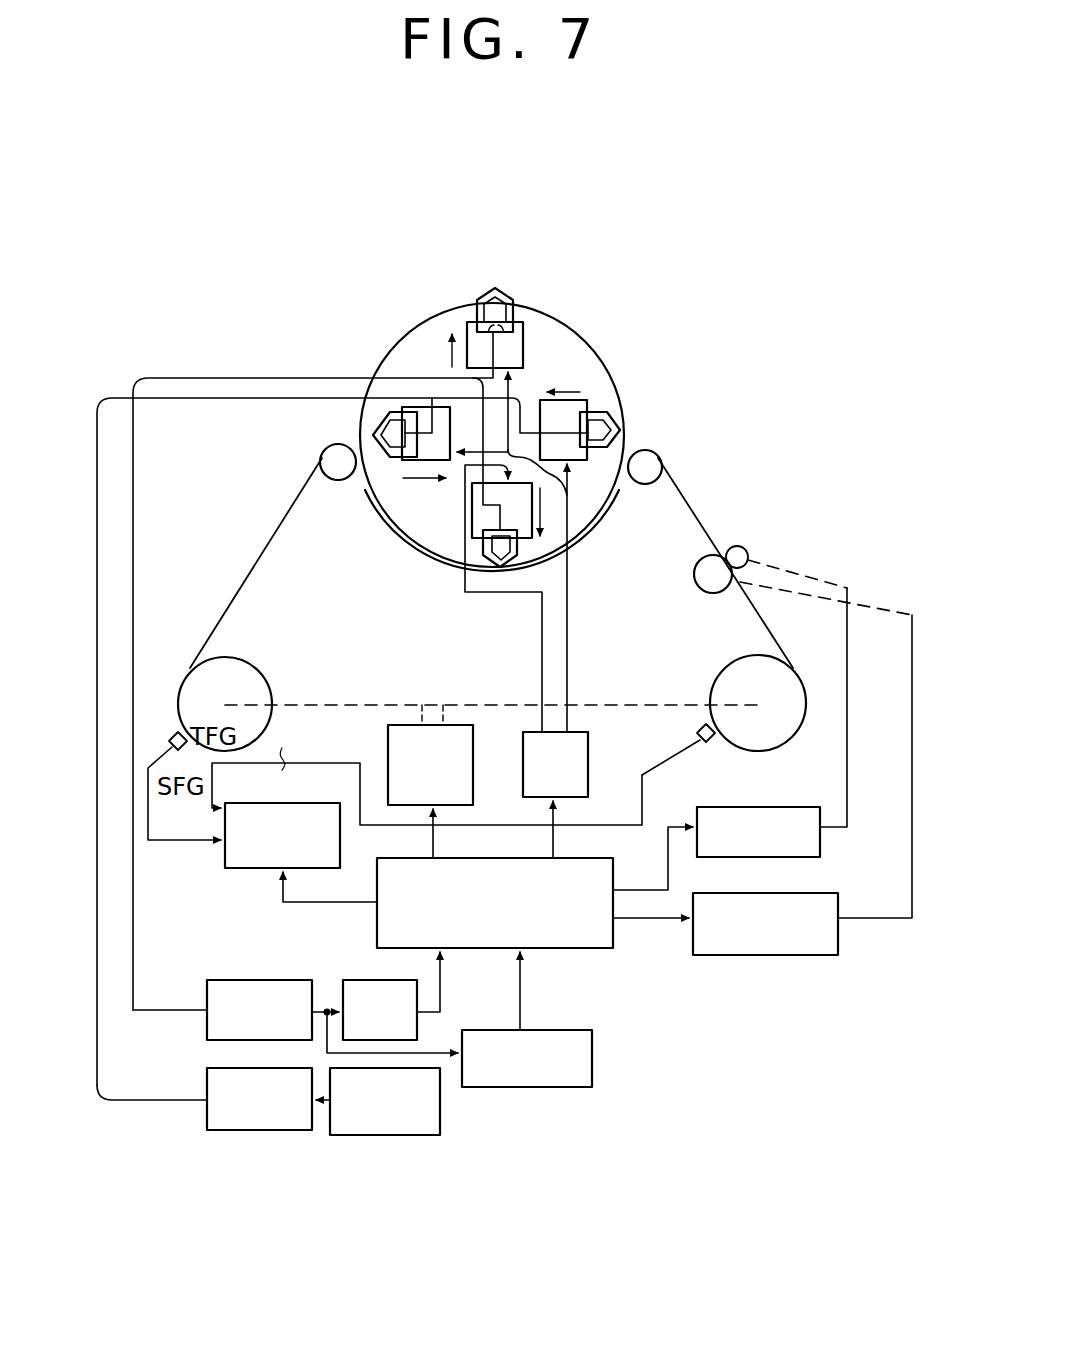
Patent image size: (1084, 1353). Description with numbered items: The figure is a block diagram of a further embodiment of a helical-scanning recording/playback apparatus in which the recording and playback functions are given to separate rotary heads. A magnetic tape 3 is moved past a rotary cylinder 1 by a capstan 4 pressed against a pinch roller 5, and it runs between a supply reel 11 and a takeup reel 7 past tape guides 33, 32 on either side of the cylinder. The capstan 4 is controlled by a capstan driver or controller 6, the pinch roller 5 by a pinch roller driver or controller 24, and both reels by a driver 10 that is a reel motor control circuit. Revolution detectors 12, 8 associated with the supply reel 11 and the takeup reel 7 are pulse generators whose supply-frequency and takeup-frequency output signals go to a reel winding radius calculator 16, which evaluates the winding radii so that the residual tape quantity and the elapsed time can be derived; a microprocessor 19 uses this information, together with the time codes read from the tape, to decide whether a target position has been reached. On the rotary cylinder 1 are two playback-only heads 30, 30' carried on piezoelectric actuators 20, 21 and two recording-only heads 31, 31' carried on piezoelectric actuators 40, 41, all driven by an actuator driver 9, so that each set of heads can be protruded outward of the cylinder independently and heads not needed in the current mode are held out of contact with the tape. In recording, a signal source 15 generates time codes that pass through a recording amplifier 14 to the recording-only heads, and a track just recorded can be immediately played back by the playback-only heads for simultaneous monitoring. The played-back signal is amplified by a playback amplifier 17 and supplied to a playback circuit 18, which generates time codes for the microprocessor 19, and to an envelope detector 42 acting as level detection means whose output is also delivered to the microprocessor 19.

The rotary cylinder 1 is at (590, 350).
The magnetic tape 3 is at (676, 476).
The capstan 4 is at (744, 547).
The pinch roller 5 is at (698, 565).
The capstan driver or controller 6 is at (780, 807).
The takeup reel 7 is at (718, 674).
The revolution detector 8 is at (710, 742).
The actuator driver 9 is at (588, 752).
The driver 10 is at (473, 752).
The supply reel 11 is at (262, 675).
The revolution detector 12 is at (172, 733).
The recording amplifier 14 is at (297, 1130).
The signal source 15 is at (398, 1135).
The reel winding radius calculator 16 is at (284, 803).
The playback amplifier 17 is at (267, 980).
The playback circuit 18 is at (367, 980).
The microprocessor 19 is at (614, 888).
The actuator 20 is at (523, 350).
The actuator 21 is at (483, 507).
The pinch roller driver or controller 24 is at (812, 893).
The playback-only head 30 is at (523, 293).
The playback-only head 30' is at (488, 584).
The recording-only head 31 is at (598, 414).
The recording-only head 31' is at (379, 479).
The tape guide 32 is at (648, 451).
The tape guide 33 is at (330, 480).
The actuator 40 is at (592, 450).
The actuator 41 is at (386, 414).
The envelope detector 42 is at (543, 1087).